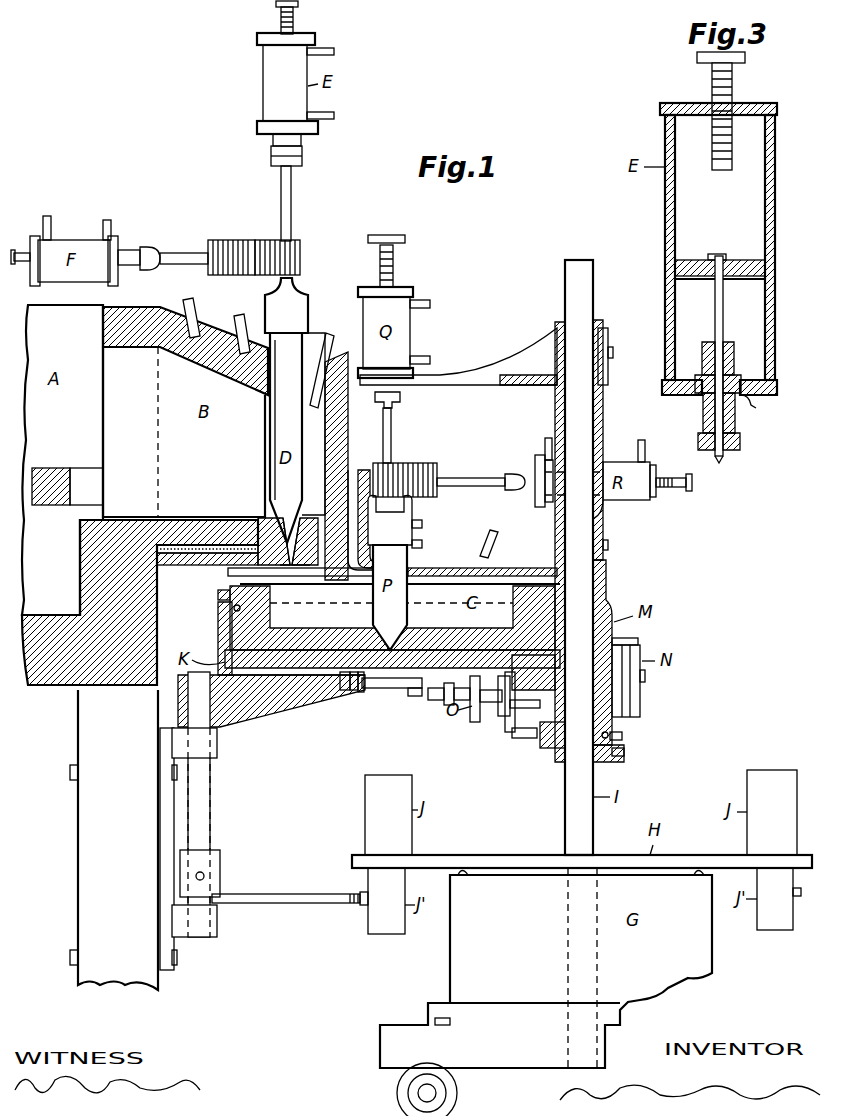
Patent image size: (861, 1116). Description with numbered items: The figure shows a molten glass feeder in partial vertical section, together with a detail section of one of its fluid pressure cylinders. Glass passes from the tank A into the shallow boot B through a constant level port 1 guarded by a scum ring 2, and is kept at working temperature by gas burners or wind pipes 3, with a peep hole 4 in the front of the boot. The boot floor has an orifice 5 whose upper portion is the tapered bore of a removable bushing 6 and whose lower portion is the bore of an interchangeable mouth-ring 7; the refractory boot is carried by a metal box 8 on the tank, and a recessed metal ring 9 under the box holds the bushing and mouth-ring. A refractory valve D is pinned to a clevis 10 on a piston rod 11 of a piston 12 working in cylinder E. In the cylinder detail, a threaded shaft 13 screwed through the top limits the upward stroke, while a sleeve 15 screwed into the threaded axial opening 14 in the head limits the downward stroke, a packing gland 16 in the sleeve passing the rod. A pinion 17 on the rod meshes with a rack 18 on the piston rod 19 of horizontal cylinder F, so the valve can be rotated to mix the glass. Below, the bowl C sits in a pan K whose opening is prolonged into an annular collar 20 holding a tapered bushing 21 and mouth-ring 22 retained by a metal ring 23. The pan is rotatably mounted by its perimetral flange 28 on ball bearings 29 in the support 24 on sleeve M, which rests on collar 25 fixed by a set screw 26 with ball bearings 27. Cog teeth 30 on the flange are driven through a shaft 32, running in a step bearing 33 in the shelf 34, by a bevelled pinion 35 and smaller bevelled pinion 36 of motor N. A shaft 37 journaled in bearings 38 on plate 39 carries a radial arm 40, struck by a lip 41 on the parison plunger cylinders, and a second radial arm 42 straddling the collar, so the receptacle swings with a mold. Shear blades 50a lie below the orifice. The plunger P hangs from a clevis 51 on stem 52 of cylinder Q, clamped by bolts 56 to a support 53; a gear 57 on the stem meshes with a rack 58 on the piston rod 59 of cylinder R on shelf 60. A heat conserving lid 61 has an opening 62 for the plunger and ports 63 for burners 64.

In FIG. 1, the constant level port or passage 1 is at (184, 432).
In FIG. 1, the scum ring 2 is at (58, 468).
In FIG. 1, the gas-burners or wind pipes 3 is at (197, 305).
In FIG. 1, the peep hole 4 is at (333, 453).
In FIG. 1, the orifice 5 is at (295, 541).
In FIG. 1, the removable bushing 6 is at (263, 522).
In FIG. 1, the interchangeable mouth-ring 7 is at (300, 588).
In FIG. 1, the metal frame or box 8 is at (366, 470).
In FIG. 1, the recessed metal ring 9 is at (245, 577).
In FIG. 1, the clevis 10 is at (308, 292).
In FIG. 1, the piston rod 11 is at (292, 204).
In FIG. 3, the piston rod 11 is at (724, 456).
In FIG. 3, the piston 12 is at (740, 280).
In FIG. 1, the threaded shaft 13 is at (294, 14).
In FIG. 3, the threaded shaft 13 is at (733, 72).
In FIG. 3, the threaded axial opening 14 is at (748, 402).
In FIG. 3, the sleeve 15 is at (702, 412).
In FIG. 3, the packing gland 16 is at (703, 440).
In FIG. 1, the pinion 17 is at (302, 248).
In FIG. 1, the rack 18 is at (236, 246).
In FIG. 1, the piston rod 19 is at (181, 253).
In FIG. 1, the annular collar 20 is at (345, 684).
In FIG. 1, the tapered bushing 21 is at (354, 686).
In FIG. 1, the interchangeable mouth-ring 22 is at (404, 696).
In FIG. 1, the metal ring 23 is at (361, 690).
In FIG. 1, the annular support or frame 24 is at (228, 645).
In FIG. 1, the collar 25 is at (550, 760).
In FIG. 1, the set screw 26 is at (624, 752).
In FIG. 1, the ball bearings 27 is at (622, 736).
In FIG. 1, the perimetral flange 28 is at (222, 602).
In FIG. 1, the ball bearings 29 is at (232, 611).
In FIG. 1, the annular series of cog teeth 30 is at (220, 595).
In FIG. 1, the shaft 32 is at (504, 704).
In FIG. 1, the step bearing 33 is at (508, 708).
In FIG. 1, the shelf 34 is at (512, 714).
In FIG. 1, the bevelled pinion 35 is at (514, 722).
In FIG. 1, the smaller bevelled pinion 36 is at (617, 645).
In FIG. 1, the shaft 37 is at (212, 798).
In FIG. 1, the bearings 38 is at (224, 925).
In FIG. 1, the plate 39 is at (158, 852).
In FIG. 1, the radial arm 40 is at (290, 894).
In FIG. 1, the lip 41 is at (357, 905).
In FIG. 1, the second radial arm 42 is at (293, 690).
In FIG. 1, the shear blades 50a is at (383, 690).
In FIG. 1, the clevis 51 is at (412, 528).
In FIG. 1, the stem 52 is at (392, 436).
In FIG. 1, the support 53 is at (452, 374).
In FIG. 1, the bolts 56 is at (402, 400).
In FIG. 1, the gear 57 is at (403, 463).
In FIG. 1, the rack 58 is at (440, 470).
In FIG. 1, the piston rod 59 is at (482, 476).
In FIG. 1, the shelf 60 is at (630, 500).
In FIG. 1, the heat conserving lid 61 is at (432, 568).
In FIG. 1, the opening 62 is at (413, 555).
In FIG. 1, the ports 63 is at (478, 568).
In FIG. 1, the gas burners or wind pipes 64 is at (488, 540).